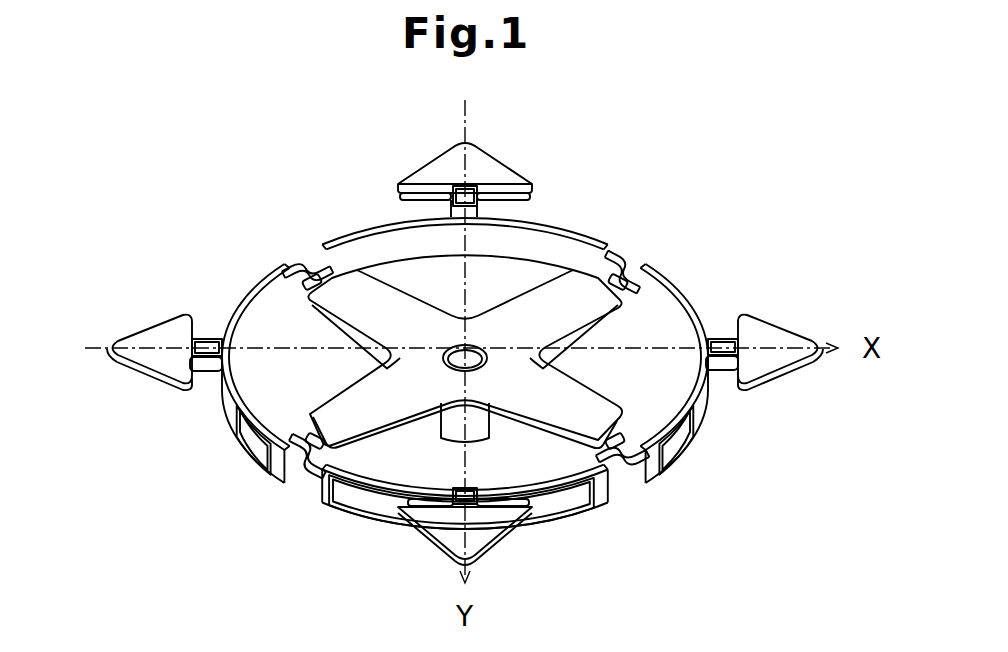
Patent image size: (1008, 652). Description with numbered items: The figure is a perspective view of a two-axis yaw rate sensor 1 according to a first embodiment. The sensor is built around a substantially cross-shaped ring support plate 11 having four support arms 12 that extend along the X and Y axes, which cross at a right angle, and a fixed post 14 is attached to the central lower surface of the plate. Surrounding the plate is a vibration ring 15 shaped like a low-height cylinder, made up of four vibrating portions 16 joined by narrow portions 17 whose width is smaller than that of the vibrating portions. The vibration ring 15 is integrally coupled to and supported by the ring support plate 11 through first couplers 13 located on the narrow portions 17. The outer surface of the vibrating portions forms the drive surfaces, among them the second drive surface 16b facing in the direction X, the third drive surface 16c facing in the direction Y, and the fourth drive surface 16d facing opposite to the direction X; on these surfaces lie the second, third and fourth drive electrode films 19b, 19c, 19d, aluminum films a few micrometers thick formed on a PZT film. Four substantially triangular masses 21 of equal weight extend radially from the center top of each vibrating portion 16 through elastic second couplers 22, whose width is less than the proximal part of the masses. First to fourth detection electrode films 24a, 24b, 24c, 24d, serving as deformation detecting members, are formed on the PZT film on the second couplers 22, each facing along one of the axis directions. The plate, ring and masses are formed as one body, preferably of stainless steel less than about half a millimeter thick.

The yaw rate sensor 1 is at (700, 158).
The ring support plate 11 is at (384, 285).
The support arms 12 is at (350, 322).
The first couplers 13 is at (305, 290).
The fixed post 14 is at (494, 422).
The vibration ring 15 is at (600, 240).
The vibrating portions 16 is at (483, 248).
The second drive surface 16b is at (706, 435).
The third drive surface 16c is at (348, 510).
The fourth drive surface 16d is at (262, 460).
The narrow portions 17 is at (290, 265).
The second drive electrode film 19b is at (710, 400).
The third drive electrode film 19c is at (550, 515).
The fourth drive electrode film 19d is at (232, 420).
The masses 21 is at (490, 158).
The second couplers 22 is at (440, 204).
The first detection electrode film 24a is at (515, 214).
The second detection electrode film 24b is at (744, 324).
The third detection electrode film 24c is at (470, 500).
The fourth detection electrode film 24d is at (199, 374).